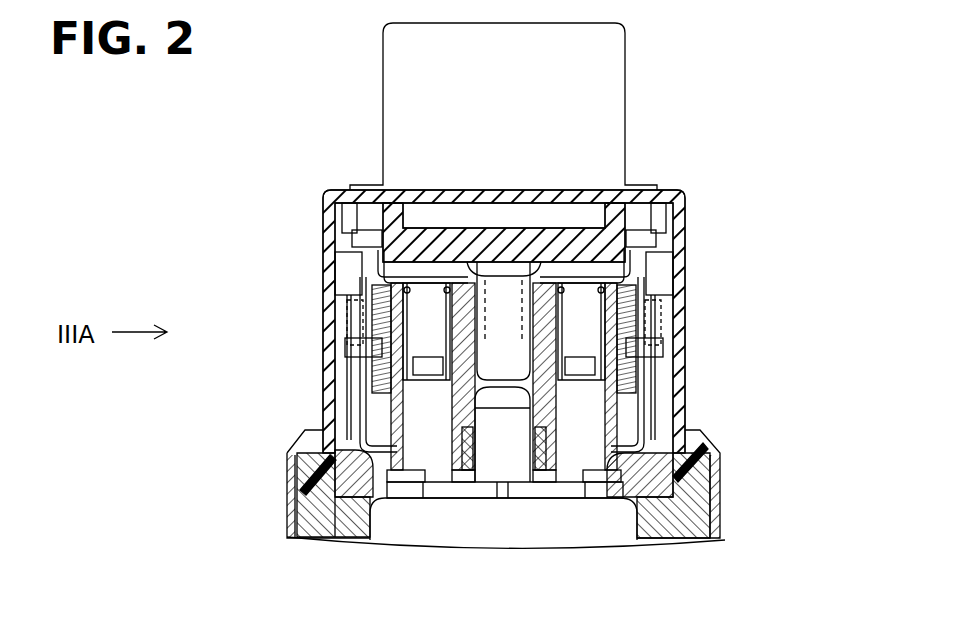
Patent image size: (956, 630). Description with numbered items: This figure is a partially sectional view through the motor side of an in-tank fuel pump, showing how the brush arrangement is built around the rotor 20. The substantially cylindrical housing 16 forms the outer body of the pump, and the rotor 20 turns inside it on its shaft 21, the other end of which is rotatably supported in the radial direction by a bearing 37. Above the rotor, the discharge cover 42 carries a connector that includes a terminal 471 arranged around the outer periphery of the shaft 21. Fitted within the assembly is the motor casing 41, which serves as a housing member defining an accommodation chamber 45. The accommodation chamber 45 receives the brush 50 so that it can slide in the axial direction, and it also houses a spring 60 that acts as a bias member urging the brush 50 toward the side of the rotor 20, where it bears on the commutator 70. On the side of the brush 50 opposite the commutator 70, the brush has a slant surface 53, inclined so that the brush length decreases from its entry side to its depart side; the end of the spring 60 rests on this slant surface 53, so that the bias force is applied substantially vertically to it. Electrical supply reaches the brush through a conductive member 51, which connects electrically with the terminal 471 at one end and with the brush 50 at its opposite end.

The terminal 471 is at (432, 232).
The discharge cover 42 is at (683, 253).
The spring 60 is at (350, 295).
The accommodation chamber 45 is at (415, 325).
The shaft 21 is at (505, 383).
The slant surface 53 is at (412, 366).
The conductive member 51 is at (363, 404).
The bearing 37 is at (452, 438).
The brush 50 is at (365, 464).
The housing 16 is at (292, 498).
The motor casing 41 is at (706, 463).
The commutator 70 is at (702, 506).
The rotor 20 is at (700, 540).